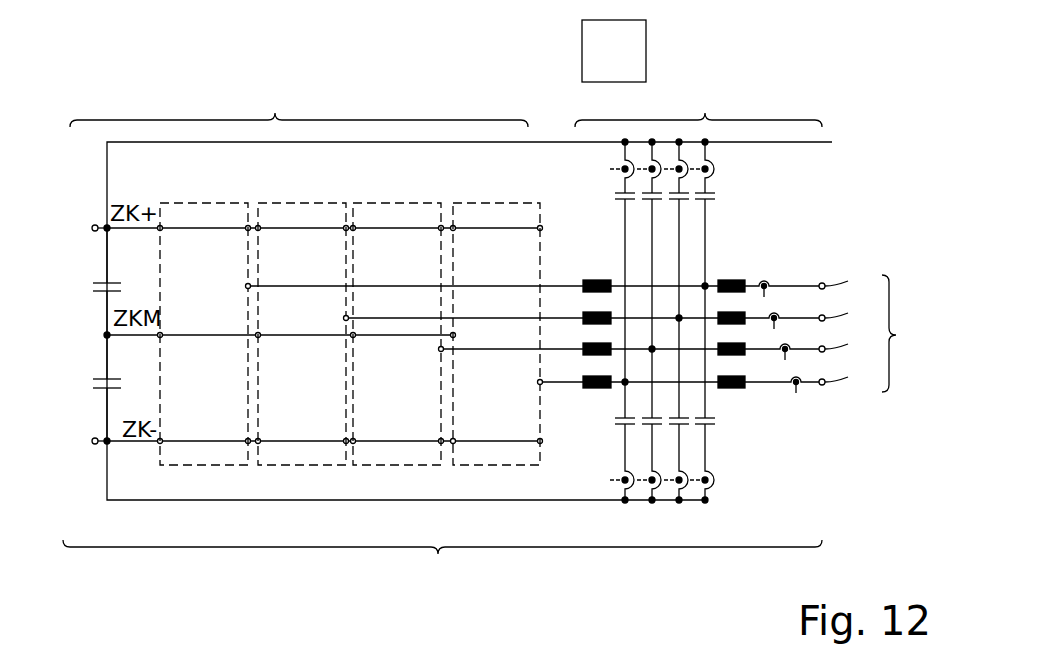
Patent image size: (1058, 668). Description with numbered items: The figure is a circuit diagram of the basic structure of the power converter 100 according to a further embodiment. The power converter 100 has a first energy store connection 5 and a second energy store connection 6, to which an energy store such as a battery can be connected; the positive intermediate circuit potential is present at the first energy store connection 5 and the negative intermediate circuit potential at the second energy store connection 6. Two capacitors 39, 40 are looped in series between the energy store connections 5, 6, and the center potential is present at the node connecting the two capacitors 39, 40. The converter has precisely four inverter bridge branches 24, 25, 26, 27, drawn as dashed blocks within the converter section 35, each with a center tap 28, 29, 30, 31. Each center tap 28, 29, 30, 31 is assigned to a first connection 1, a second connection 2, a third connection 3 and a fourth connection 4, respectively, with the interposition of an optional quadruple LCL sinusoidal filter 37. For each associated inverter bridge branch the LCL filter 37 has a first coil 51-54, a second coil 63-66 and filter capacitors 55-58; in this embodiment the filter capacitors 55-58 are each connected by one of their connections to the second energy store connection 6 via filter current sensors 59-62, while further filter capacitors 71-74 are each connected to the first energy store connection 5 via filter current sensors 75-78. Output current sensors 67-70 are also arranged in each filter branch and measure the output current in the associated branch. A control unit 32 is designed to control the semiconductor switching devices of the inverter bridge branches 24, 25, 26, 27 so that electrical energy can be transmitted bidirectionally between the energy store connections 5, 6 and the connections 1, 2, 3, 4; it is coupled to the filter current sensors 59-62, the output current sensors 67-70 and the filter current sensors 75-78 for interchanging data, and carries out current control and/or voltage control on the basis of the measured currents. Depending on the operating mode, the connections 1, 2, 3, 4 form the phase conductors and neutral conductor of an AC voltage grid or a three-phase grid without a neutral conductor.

The first connection 1 is at (844, 287).
The second connection 2 is at (844, 319).
The third connection 3 is at (844, 350).
The fourth connection 4 is at (844, 383).
The first energy store connection 5 is at (92, 227).
The second energy store connection 6 is at (92, 440).
The inverter bridge branch 24 is at (205, 203).
The inverter bridge branch 25 is at (301, 203).
The inverter bridge branch 26 is at (393, 203).
The inverter bridge branch 27 is at (481, 203).
The center tap 28 is at (246, 286).
The center tap 29 is at (344, 318).
The center tap 30 is at (439, 349).
The center tap 31 is at (538, 382).
The control unit 32 is at (614, 51).
The converter section 35 is at (299, 105).
The quadruple LCL sinusoidal filter 37 is at (698, 105).
The capacitor 39 is at (92, 284).
The capacitor 40 is at (92, 380).
The first coils 51-54 is at (585, 310).
The filter capacitors 55-58 is at (714, 421).
The filter current sensors 59-62 is at (714, 481).
The second coils 63-66 is at (761, 307).
The output current sensors 67-70 is at (783, 363).
The filter capacitors 71-74 is at (714, 197).
The filter current sensors 75-78 is at (714, 161).
The power converter 100 is at (442, 565).